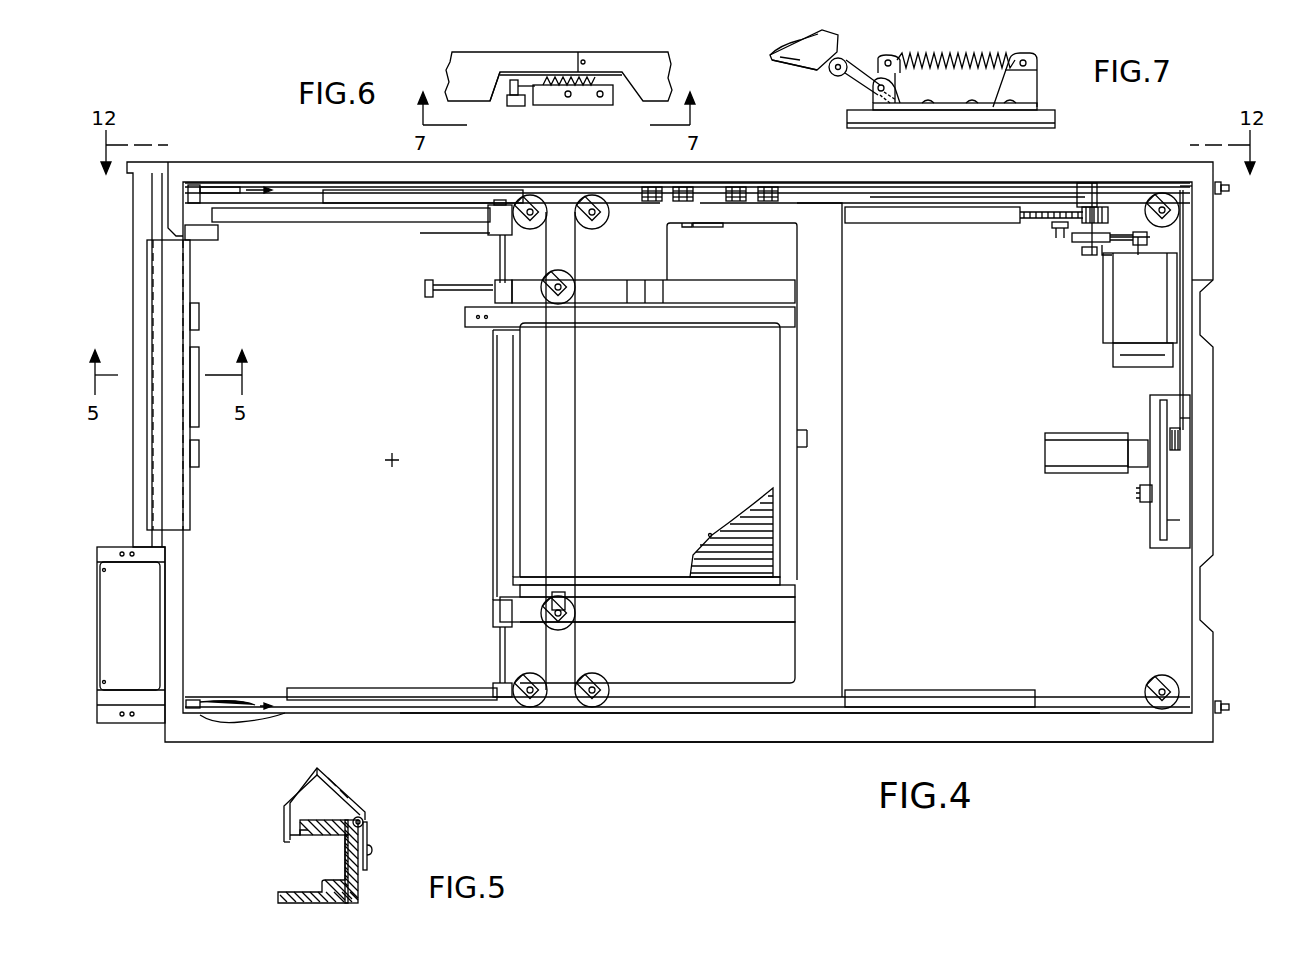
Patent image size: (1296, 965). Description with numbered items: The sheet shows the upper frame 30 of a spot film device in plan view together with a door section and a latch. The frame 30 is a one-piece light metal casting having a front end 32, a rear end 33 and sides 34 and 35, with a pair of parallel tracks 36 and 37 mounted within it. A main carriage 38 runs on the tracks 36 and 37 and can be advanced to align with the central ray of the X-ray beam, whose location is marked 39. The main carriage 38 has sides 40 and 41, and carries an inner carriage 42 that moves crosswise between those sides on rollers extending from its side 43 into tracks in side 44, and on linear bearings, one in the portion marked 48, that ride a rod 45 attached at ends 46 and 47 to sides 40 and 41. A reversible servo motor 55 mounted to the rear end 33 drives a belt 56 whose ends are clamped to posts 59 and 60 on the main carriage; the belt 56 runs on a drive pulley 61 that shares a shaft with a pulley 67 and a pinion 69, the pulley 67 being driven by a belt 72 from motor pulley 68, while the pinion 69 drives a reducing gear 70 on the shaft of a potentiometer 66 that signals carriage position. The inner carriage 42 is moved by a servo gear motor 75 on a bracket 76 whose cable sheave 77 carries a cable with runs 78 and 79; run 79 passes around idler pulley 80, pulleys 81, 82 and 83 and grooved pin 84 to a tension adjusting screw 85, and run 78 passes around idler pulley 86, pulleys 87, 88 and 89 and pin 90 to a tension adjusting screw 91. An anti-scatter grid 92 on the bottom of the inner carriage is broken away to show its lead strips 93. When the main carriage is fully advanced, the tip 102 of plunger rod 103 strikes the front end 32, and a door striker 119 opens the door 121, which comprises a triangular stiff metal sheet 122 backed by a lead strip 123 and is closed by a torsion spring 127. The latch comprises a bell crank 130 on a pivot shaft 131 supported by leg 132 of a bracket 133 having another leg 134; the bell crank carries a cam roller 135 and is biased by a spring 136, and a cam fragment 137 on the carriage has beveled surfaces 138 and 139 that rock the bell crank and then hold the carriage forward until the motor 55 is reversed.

In FIG. 4, the upper frame 30 is at (1103, 740).
In FIG. 4, the front end 32 is at (175, 606).
In FIG. 5, the front end 32 is at (358, 890).
In FIG. 4, the rear end 33 is at (1200, 372).
In FIG. 4, the side 34 is at (764, 185).
In FIG. 6, the side 34 is at (652, 68).
In FIG. 4, the side 35 is at (765, 730).
In FIG. 4, the track 36 is at (893, 697).
In FIG. 4, the track 37 is at (905, 225).
In FIG. 4, the main carriage 38 is at (853, 460).
In FIG. 4, the central ray location 39 is at (398, 455).
In FIG. 4, the side 40 is at (722, 228).
In FIG. 4, the side 41 is at (688, 690).
In FIG. 4, the inner carriage 42 is at (486, 533).
In FIG. 4, the side 43 is at (776, 408).
In FIG. 4, the side 44 is at (835, 358).
In FIG. 4, the rod 45 is at (500, 660).
In FIG. 4, the end 46 is at (492, 238).
In FIG. 4, the end 47 is at (495, 688).
In FIG. 4, the inner carriage portion 48 is at (493, 618).
In FIG. 4, the reversible servo motor 55 is at (1105, 295).
In FIG. 4, the belt 56 is at (1040, 186).
In FIG. 4, the post 59 is at (740, 186).
In FIG. 4, the post 60 is at (680, 186).
In FIG. 4, the drive pulley 61 is at (1088, 184).
In FIG. 4, the potentiometer 66 is at (1058, 238).
In FIG. 4, the pulley 67 is at (1105, 232).
In FIG. 4, the motor pulley 68 is at (1150, 237).
In FIG. 4, the pinion 69 is at (1096, 205).
In FIG. 4, the reducing gear 70 is at (1030, 222).
In FIG. 4, the belt 72 is at (1105, 256).
In FIG. 4, the reversible servo gear motor 75 is at (1065, 450).
In FIG. 4, the bracket 76 is at (1150, 420).
In FIG. 4, the cable sheave 77 is at (1185, 448).
In FIG. 4, the cable run 78 is at (1180, 518).
In FIG. 4, the cable run 79 is at (1186, 418).
In FIG. 4, the idler pulley 80 is at (1180, 214).
In FIG. 4, the pulley 81 is at (600, 226).
In FIG. 4, the pulley 82 is at (565, 275).
In FIG. 4, the pulley 83 is at (530, 195).
In FIG. 4, the grooved pin 84 is at (192, 190).
In FIG. 4, the tension adjusting screw 85 is at (1176, 165).
In FIG. 4, the idler pulley 86 is at (1165, 712).
In FIG. 4, the pulley 87 is at (600, 678).
In FIG. 4, the pulley 88 is at (566, 605).
In FIG. 4, the pulley 89 is at (525, 707).
In FIG. 4, the pin 90 is at (198, 700).
In FIG. 4, the tension adjusting screw 91 is at (1232, 708).
In FIG. 4, the X-ray anti-scatter grid 92 is at (708, 490).
In FIG. 4, the lead X-ray attenuating strips 93 is at (708, 536).
In FIG. 4, the tip 102 is at (425, 288).
In FIG. 4, the plunger rod 103 is at (490, 292).
In FIG. 4, the door striker 119 is at (472, 328).
In FIG. 4, the door 121 is at (190, 272).
In FIG. 5, the door 121 is at (376, 795).
In FIG. 5, the stiff metal sheet 122 is at (297, 782).
In FIG. 5, the lead strip 123 is at (290, 822).
In FIG. 5, the torsion spring 127 is at (368, 830).
In FIG. 7, the bell crank 130 is at (862, 65).
In FIG. 7, the pivot shaft 131 is at (872, 93).
In FIG. 7, the leg 132 is at (895, 110).
In FIG. 7, the bracket 133 is at (976, 90).
In FIG. 6, the leg 134 is at (610, 106).
In FIG. 7, the leg 134 is at (1028, 90).
In FIG. 6, the cam roller 135 is at (517, 106).
In FIG. 7, the cam roller 135 is at (842, 58).
In FIG. 6, the spring 136 is at (583, 87).
In FIG. 7, the spring 136 is at (985, 58).
In FIG. 7, the cam fragment 137 is at (775, 59).
In FIG. 7, the beveled surface 138 is at (800, 36).
In FIG. 7, the beveled surface 139 is at (800, 62).